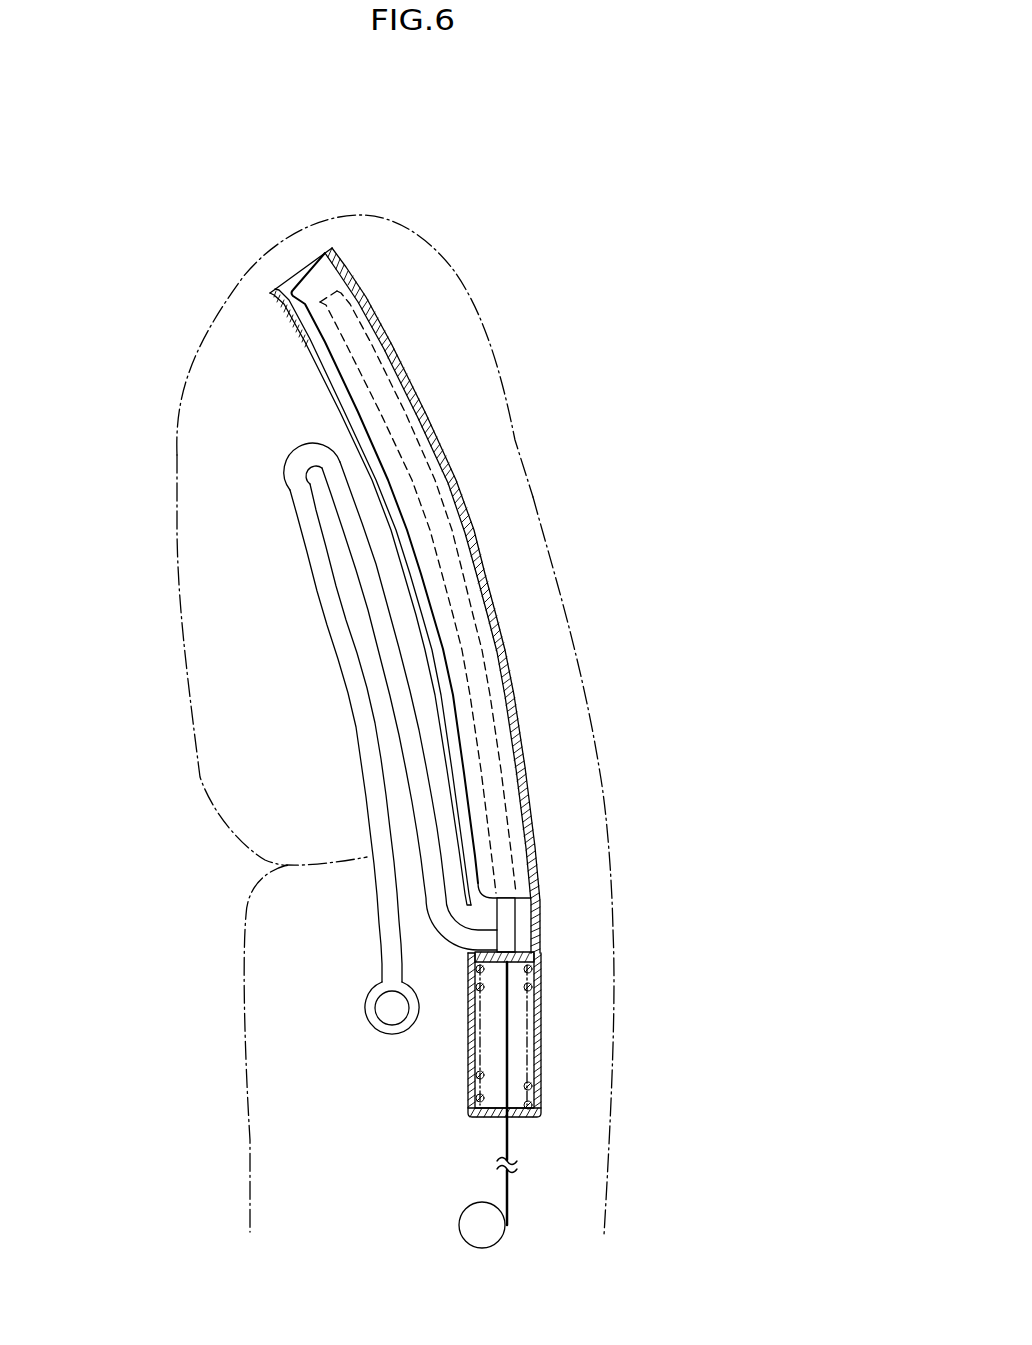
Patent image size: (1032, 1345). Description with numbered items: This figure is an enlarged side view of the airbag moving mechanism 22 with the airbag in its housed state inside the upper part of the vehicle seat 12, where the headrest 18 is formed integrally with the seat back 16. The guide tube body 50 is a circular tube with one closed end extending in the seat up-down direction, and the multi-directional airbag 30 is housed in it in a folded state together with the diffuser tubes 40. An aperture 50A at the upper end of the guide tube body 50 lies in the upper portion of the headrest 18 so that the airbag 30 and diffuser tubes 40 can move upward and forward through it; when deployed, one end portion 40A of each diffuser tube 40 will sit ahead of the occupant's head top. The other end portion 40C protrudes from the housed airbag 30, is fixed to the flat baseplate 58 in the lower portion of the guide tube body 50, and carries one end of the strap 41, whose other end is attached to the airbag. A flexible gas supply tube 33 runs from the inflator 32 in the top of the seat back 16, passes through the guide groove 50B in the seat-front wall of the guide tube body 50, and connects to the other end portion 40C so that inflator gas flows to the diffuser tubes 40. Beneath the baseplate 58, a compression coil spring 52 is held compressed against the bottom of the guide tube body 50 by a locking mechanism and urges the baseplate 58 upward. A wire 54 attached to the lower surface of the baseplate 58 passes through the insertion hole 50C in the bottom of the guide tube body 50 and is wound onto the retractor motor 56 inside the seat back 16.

The vehicle seat 12 is at (607, 812).
The seat back 16 is at (613, 1043).
The headrest 18 is at (557, 580).
The airbag moving mechanism 22 is at (551, 1105).
The multi-directional airbag 30 is at (297, 282).
The inflator 32 is at (380, 1020).
The gas supply tube 33 is at (352, 690).
The diffuser tube 40 is at (528, 565).
The one end portion of diffuser tube 40A is at (348, 291).
The other end portion of diffuser tube 40C is at (520, 910).
The strap 41 is at (533, 862).
The guide tube body 50 is at (422, 539).
The aperture 50A is at (327, 256).
The guide groove 50B is at (309, 342).
The insertion hole 50C is at (510, 1120).
The compression coil spring 52 is at (543, 1018).
The wire 54 is at (507, 1138).
The retractor motor 56 is at (459, 1225).
The baseplate 58 is at (541, 946).